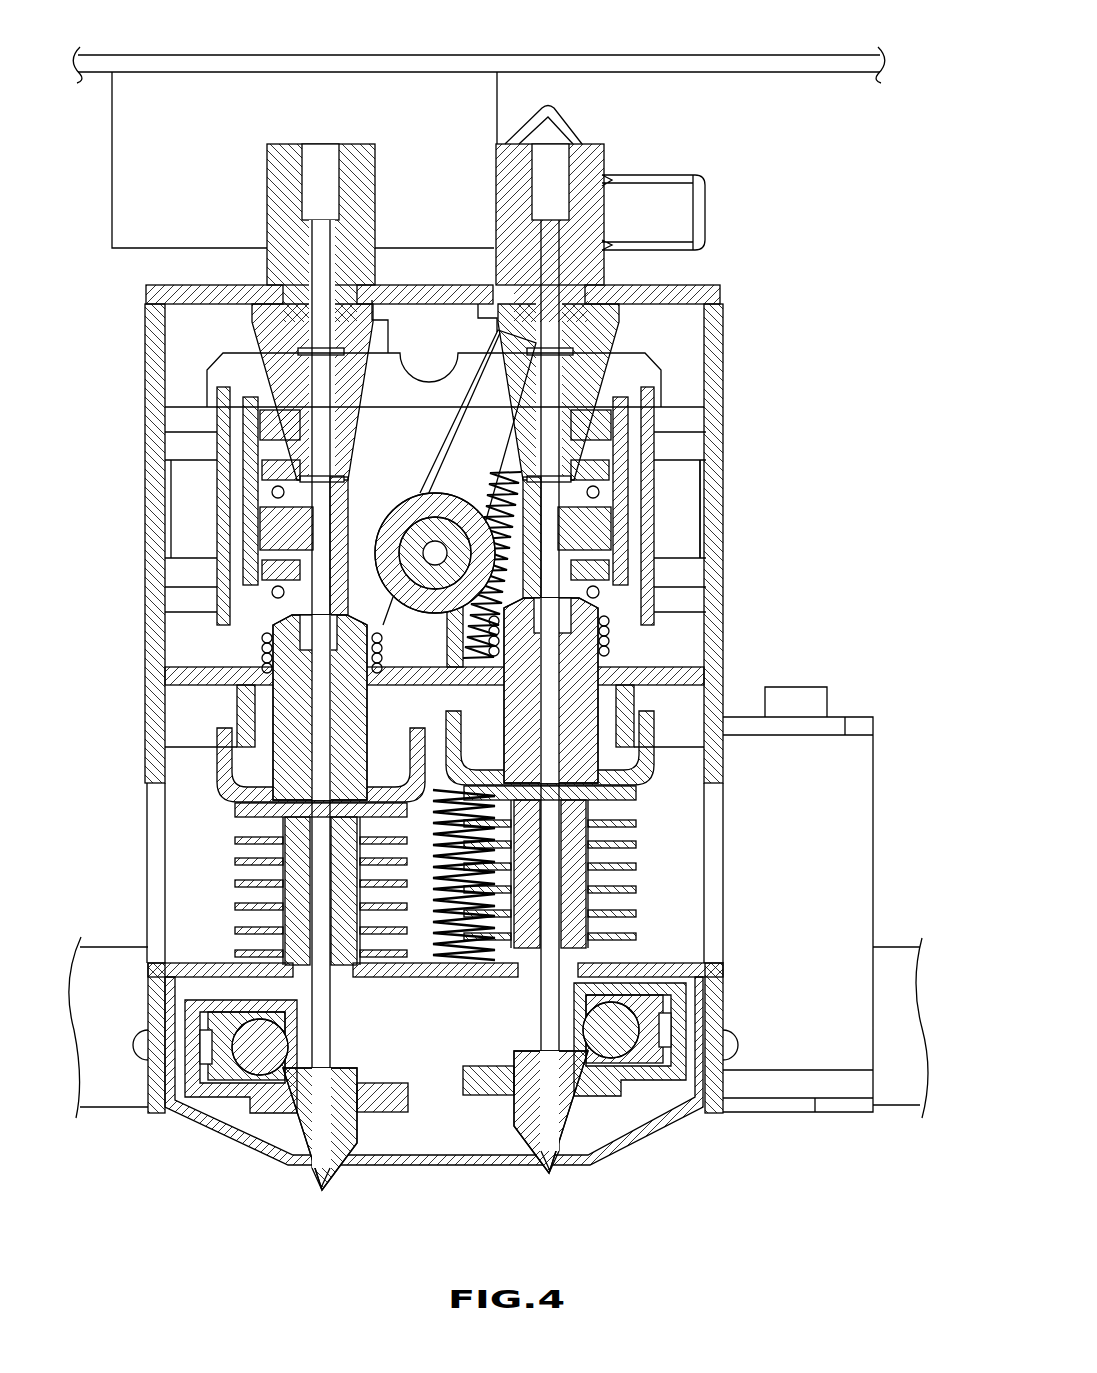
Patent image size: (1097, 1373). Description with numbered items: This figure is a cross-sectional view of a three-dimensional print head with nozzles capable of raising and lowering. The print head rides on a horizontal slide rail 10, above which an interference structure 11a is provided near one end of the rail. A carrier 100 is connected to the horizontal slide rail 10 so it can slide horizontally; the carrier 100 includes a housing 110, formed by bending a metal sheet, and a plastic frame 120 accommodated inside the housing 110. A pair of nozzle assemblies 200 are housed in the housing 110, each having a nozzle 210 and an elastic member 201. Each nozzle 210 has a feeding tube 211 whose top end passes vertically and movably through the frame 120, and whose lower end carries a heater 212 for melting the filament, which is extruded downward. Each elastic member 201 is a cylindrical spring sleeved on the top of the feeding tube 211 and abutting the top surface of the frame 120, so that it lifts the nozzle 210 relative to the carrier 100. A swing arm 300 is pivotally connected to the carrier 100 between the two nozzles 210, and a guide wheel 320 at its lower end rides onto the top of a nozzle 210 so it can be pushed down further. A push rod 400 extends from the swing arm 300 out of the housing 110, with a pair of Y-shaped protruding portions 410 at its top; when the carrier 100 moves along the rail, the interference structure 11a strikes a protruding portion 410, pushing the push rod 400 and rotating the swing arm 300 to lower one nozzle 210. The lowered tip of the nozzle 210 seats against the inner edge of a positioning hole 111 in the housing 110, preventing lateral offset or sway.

The horizontal slide rail 10 is at (113, 970).
The interference structure 11a is at (152, 105).
The carrier 100 is at (728, 338).
The housing 110 is at (712, 545).
The positioning hole 111 is at (567, 1160).
The frame 120 is at (625, 712).
The nozzle assembly 200 is at (227, 868).
The elastic member 201 is at (262, 652).
The nozzle 210 is at (345, 1130).
The feeding tube 211 is at (322, 722).
The heater 212 is at (258, 1048).
The swing arm 300 is at (490, 405).
The roller 320 is at (460, 545).
The push rod 400 is at (612, 250).
The protruding portion 410 is at (670, 200).